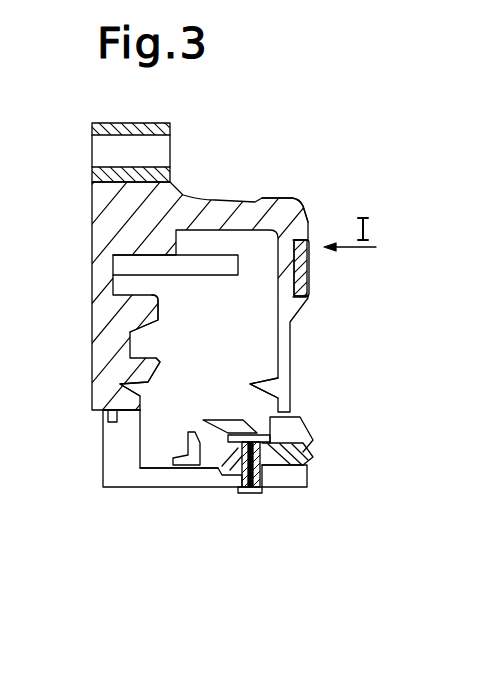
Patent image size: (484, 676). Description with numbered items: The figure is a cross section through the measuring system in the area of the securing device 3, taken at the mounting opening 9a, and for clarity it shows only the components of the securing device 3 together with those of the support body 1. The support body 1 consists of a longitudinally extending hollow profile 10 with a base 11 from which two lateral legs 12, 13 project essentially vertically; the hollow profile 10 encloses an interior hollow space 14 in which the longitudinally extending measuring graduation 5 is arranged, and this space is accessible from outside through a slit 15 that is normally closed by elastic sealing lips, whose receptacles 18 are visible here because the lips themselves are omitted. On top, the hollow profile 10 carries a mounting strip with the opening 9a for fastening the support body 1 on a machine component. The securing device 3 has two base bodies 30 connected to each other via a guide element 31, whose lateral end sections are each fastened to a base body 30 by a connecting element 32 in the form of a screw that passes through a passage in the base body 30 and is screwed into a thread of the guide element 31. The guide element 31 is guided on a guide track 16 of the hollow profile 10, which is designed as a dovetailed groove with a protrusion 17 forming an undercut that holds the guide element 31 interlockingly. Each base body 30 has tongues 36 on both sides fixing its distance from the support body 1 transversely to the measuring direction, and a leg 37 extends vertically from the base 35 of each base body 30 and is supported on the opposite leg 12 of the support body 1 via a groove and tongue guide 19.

The support body 1 is at (302, 138).
The securing device 3 is at (345, 527).
The measuring graduation 5 is at (132, 266).
The mounting opening 9a is at (163, 147).
The hollow profile 10 is at (340, 326).
The base 11 is at (267, 220).
The lateral leg 12 is at (106, 352).
The lateral leg 13 is at (285, 378).
The interior hollow space 14 is at (190, 318).
The slit 15 is at (188, 392).
The guide track 16 is at (292, 428).
The protrusion 17 is at (236, 478).
The receptacle 18 is at (58, 400).
The groove and tongue guide 19 is at (53, 483).
The base body 30 is at (137, 490).
The guide element 31 is at (272, 448).
The connecting element 32 is at (257, 494).
The base 35 is at (175, 473).
The tongue 36 is at (305, 477).
The leg 37 is at (110, 463).